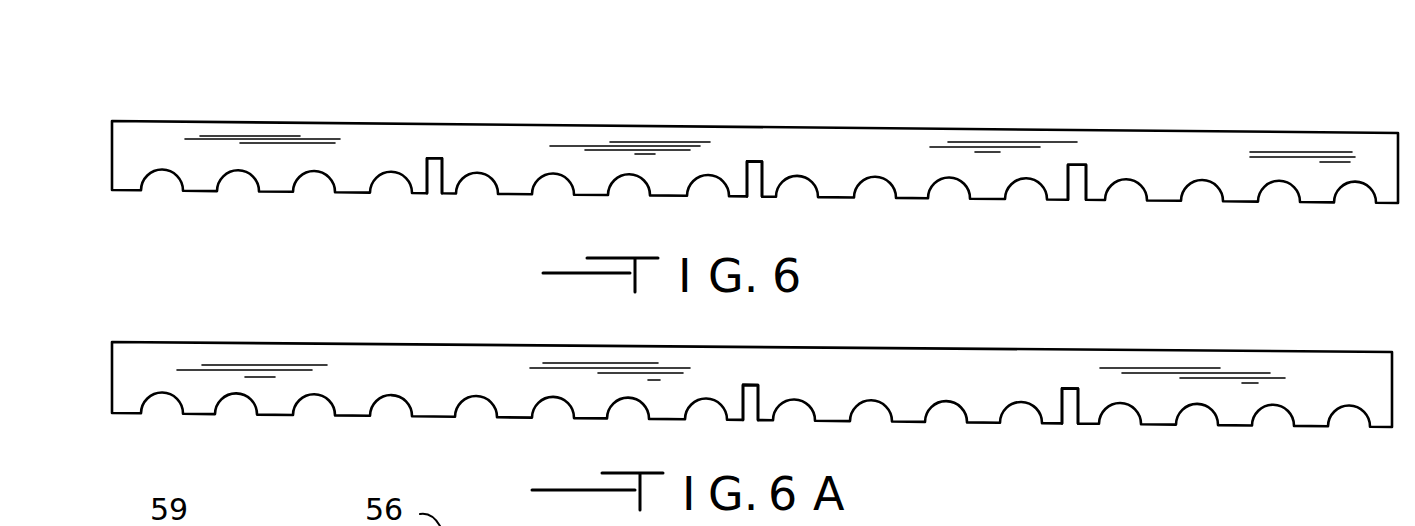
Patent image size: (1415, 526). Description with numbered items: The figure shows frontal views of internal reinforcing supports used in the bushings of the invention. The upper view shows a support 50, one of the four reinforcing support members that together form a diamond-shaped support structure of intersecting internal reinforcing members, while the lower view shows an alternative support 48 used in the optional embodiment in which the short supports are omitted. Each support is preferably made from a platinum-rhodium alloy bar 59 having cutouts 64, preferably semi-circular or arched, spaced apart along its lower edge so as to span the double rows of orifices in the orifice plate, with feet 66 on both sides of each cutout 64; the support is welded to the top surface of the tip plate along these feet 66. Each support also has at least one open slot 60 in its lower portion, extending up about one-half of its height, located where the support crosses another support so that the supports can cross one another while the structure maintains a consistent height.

In FIG. 6, the reinforcing support member 50 is at (403, 122).
In FIG. 6A, the support 48 is at (380, 342).
In FIG. 6, the platinum-rhodium alloy bar 59 is at (132, 143).
In FIG. 6A, the platinum-rhodium alloy bar 59 is at (128, 362).
In FIG. 6, the open slot 60 is at (430, 199).
In FIG. 6A, the open slot 60 is at (750, 420).
In FIG. 6, the feet 66 is at (192, 193).
In FIG. 6A, the feet 66 is at (193, 417).
In FIG. 6, the cutout 64 is at (312, 185).
In FIG. 6A, the cutout 64 is at (310, 412).